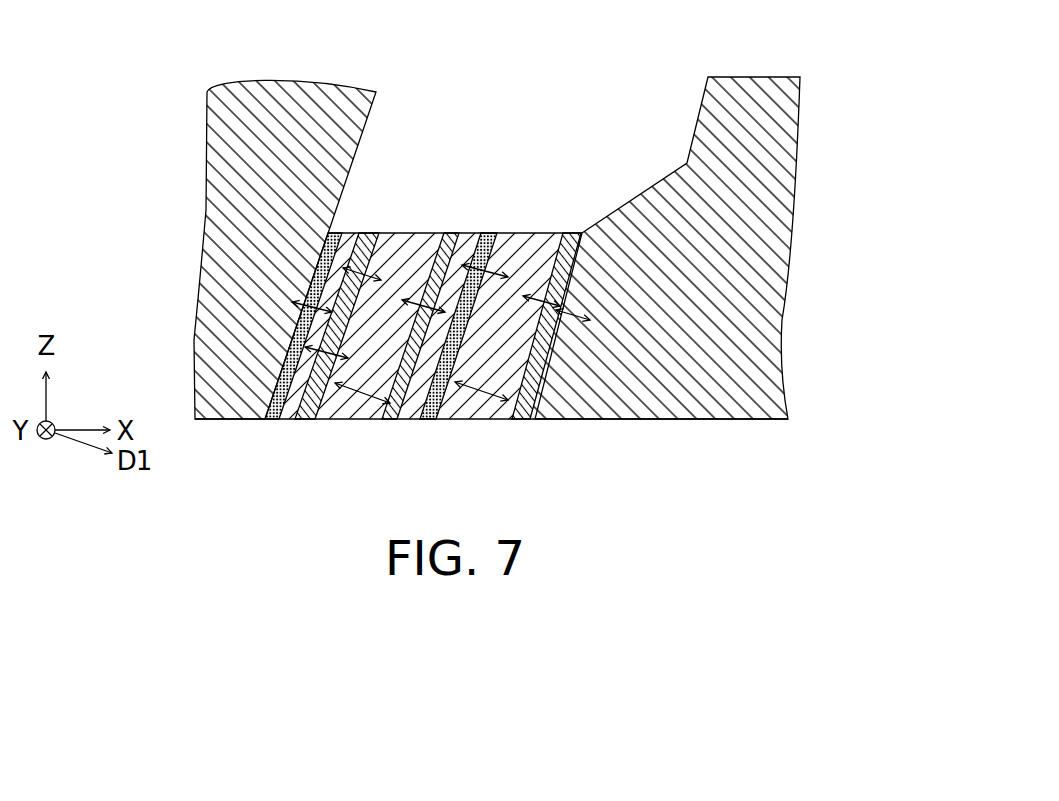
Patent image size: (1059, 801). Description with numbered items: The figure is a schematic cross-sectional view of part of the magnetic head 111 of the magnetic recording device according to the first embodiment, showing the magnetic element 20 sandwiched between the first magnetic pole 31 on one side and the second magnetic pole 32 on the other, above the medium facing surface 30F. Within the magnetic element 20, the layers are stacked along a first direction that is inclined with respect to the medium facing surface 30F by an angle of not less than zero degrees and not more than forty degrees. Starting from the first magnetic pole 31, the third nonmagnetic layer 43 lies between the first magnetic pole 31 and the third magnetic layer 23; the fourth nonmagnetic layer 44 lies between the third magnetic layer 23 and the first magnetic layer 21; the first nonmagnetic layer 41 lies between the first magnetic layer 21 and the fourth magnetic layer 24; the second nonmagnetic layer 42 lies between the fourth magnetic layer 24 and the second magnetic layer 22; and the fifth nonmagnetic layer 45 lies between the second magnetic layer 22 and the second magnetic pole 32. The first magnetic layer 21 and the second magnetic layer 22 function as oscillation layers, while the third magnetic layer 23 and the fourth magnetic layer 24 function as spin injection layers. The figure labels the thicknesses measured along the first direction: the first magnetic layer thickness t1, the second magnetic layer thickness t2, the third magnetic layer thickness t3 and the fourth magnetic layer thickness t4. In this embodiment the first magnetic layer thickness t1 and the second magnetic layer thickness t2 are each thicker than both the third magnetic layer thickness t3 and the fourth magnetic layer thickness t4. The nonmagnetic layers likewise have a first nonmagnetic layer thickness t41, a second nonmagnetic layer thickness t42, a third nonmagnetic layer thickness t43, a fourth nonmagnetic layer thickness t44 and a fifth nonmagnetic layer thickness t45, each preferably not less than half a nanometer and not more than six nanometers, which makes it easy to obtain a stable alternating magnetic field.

The magnetic head 111 is at (846, 62).
The magnetic element 20 is at (372, 46).
The first magnetic layer 21 is at (455, 233).
The second magnetic layer 22 is at (577, 233).
The third magnetic layer 23 is at (377, 233).
The fourth magnetic layer 24 is at (498, 233).
The first nonmagnetic layer 41 is at (475, 233).
The second nonmagnetic layer 42 is at (532, 233).
The third nonmagnetic layer 43 is at (337, 233).
The fourth nonmagnetic layer 44 is at (407, 233).
The fifth nonmagnetic layer 45 is at (581, 233).
The first magnetic pole 31 is at (233, 198).
The second magnetic pole 32 is at (760, 316).
The medium facing surface 30F is at (209, 424).
The first magnetic layer thickness t1 is at (375, 398).
The second magnetic layer thickness t2 is at (495, 388).
The third magnetic layer thickness t3 is at (335, 356).
The fourth magnetic layer thickness t4 is at (478, 285).
The first nonmagnetic layer thickness t41 is at (412, 308).
The second nonmagnetic layer thickness t42 is at (520, 318).
The third nonmagnetic layer thickness t43 is at (300, 318).
The fourth nonmagnetic layer thickness t44 is at (342, 273).
The fifth nonmagnetic layer thickness t45 is at (560, 314).